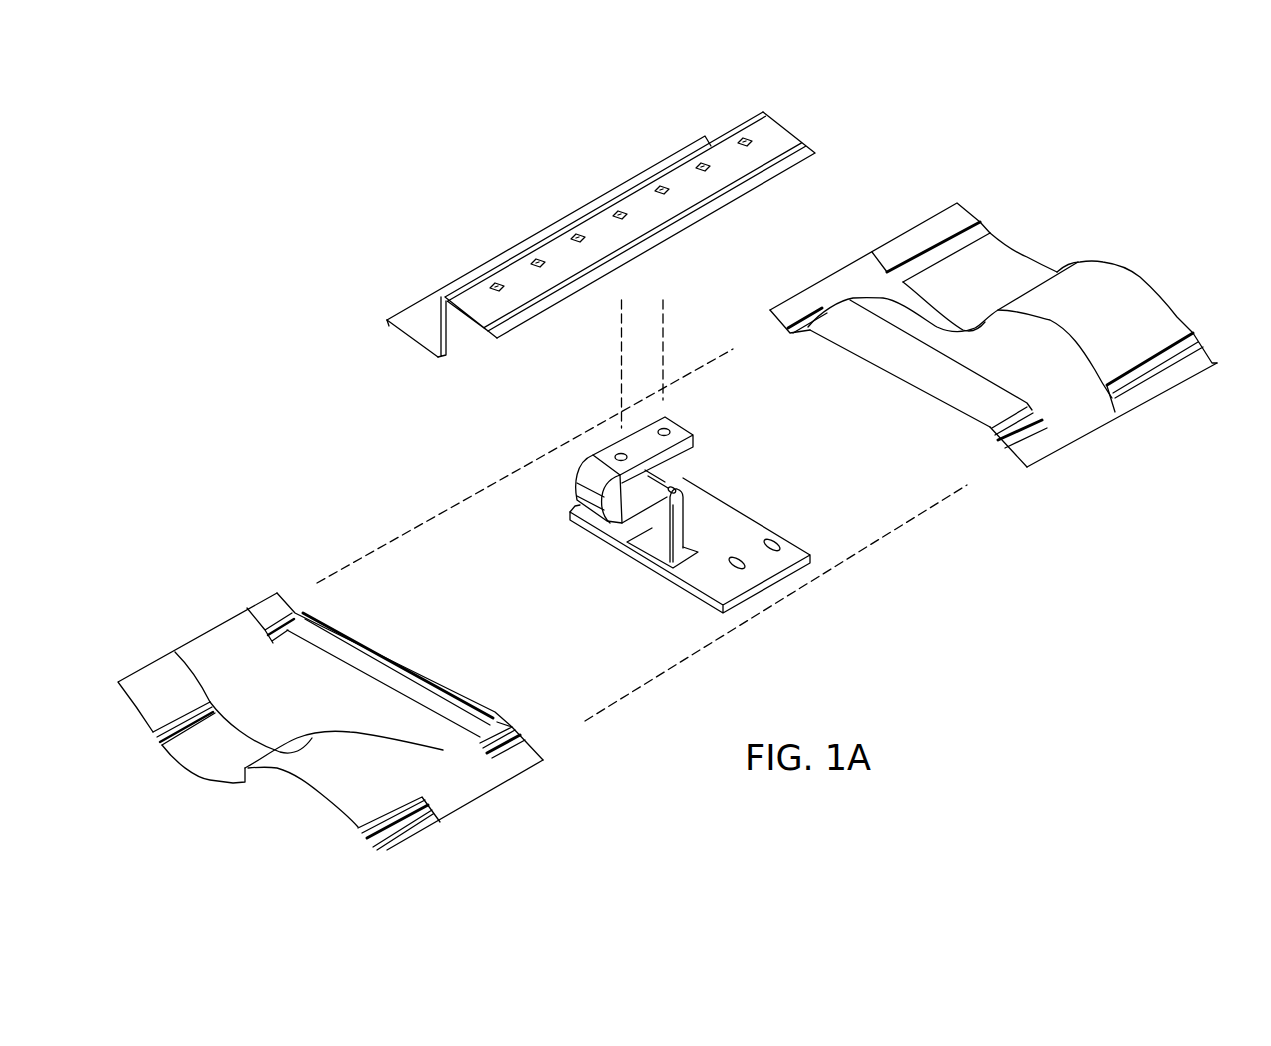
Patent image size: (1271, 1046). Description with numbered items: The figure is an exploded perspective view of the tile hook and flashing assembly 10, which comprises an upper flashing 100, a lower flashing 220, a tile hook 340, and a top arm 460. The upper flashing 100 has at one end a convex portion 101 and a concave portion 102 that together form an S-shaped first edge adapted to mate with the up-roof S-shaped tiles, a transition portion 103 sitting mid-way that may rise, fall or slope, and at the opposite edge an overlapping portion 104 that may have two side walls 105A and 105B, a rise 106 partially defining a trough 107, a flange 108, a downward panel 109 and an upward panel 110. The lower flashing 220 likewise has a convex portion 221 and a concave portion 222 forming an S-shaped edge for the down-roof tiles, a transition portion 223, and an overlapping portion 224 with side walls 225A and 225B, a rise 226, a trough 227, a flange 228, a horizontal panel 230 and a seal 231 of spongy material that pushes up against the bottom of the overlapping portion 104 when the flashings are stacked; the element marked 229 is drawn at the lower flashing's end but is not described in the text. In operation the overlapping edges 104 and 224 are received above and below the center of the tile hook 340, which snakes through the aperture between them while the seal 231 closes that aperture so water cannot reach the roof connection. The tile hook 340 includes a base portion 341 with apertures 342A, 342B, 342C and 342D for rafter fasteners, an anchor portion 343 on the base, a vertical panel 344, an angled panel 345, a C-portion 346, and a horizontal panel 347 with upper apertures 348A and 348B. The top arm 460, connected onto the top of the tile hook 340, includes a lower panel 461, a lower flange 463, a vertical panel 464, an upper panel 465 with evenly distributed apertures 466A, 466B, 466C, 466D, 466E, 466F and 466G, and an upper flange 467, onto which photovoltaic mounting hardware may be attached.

The assembly 10 is at (847, 140).
The upper flashing 100 is at (983, 329).
The convex portion 101 is at (1027, 257).
The concave portion 102 is at (1143, 272).
The transition portion 103 is at (1029, 357).
The overlapping portion 104 is at (883, 367).
The side wall 105A is at (808, 338).
The side wall 105B is at (988, 438).
The rise 106 is at (1017, 455).
The trough 107 is at (990, 447).
The flange 108 is at (1030, 462).
The downward panel 109 is at (795, 337).
The upward panel 110 is at (770, 323).
The lower flashing 220 is at (364, 707).
The convex portion 221 is at (182, 767).
The concave portion 222 is at (294, 782).
The transition portion 223 is at (337, 697).
The overlapping portion 224 is at (495, 722).
The side wall 225A is at (306, 602).
The side wall 225B is at (512, 728).
The rise 226 is at (522, 733).
The trough 227 is at (486, 754).
The flange 228 is at (378, 845).
The end hem 229 is at (220, 628).
The horizontal panel 230 is at (297, 606).
The seal 231 is at (493, 717).
The tile hook 340 is at (678, 524).
The base portion 341 is at (759, 591).
The base aperture 342A is at (731, 559).
The base aperture 342B is at (769, 541).
The base aperture 342C is at (672, 487).
The base aperture 342D is at (664, 471).
The anchor portion 343 is at (678, 555).
The vertical panel 344 is at (680, 522).
The angled panel 345 is at (650, 510).
The C-portion 346 is at (571, 516).
The horizontal panel 347 is at (657, 465).
The upper aperture 348A is at (617, 453).
The upper aperture 348B is at (667, 428).
The top arm 460 is at (584, 259).
The lower panel 461 is at (420, 345).
The lower flange 463 is at (388, 324).
The vertical panel 464 is at (446, 330).
The upper panel 465 is at (466, 318).
The aperture 466A is at (751, 145).
The aperture 466B is at (709, 170).
The aperture 466C is at (668, 193).
The aperture 466D is at (626, 218).
The aperture 466E is at (584, 241).
The aperture 466F is at (544, 266).
The aperture 466G is at (503, 290).
The upper flange 467 is at (487, 323).